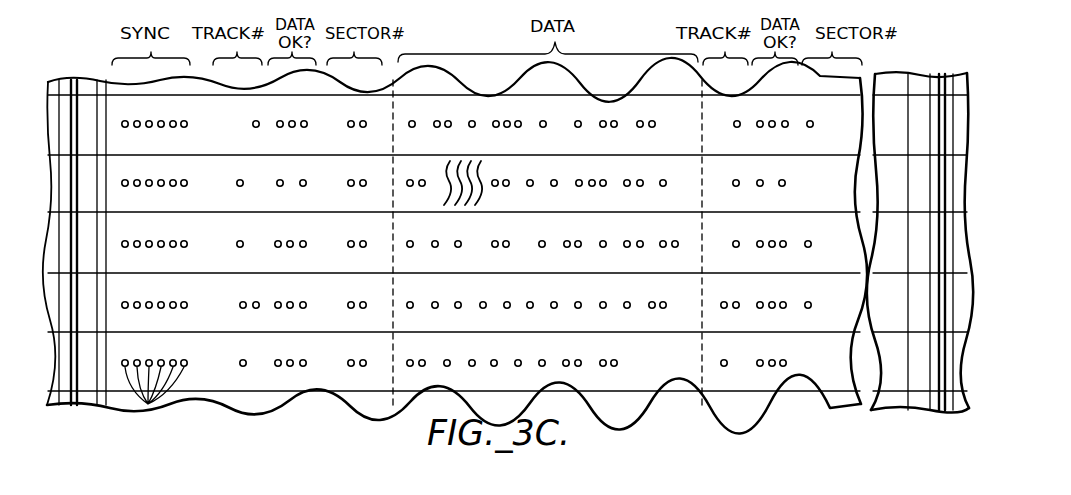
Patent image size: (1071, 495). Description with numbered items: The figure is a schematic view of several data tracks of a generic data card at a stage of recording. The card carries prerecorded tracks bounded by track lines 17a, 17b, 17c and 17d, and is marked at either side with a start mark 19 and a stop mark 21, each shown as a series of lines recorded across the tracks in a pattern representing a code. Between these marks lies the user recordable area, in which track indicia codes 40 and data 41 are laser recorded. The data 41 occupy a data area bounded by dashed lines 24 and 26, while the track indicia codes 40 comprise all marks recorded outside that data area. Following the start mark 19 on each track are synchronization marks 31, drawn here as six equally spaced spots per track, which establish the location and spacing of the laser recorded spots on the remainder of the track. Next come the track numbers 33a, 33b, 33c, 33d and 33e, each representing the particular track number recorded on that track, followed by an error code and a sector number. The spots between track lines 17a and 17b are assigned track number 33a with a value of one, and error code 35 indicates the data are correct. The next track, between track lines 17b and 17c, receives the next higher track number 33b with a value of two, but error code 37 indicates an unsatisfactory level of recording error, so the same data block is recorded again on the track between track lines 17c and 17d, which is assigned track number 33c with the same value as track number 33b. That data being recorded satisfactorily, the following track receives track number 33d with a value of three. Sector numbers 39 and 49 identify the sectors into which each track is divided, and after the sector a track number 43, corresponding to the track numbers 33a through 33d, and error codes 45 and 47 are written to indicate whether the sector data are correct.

The start mark 19 is at (87, 70).
The stop mark 21 is at (947, 66).
The data 41 is at (496, 108).
The track number 33a is at (254, 120).
The track number 33b is at (240, 179).
The track number 33c is at (240, 240).
The track number 33d is at (256, 301).
The track number 33e is at (243, 359).
The error code 35 is at (310, 138).
The error code 37 is at (300, 200).
The track line 17a is at (357, 98).
The track line 17b is at (357, 158).
The track line 17c is at (357, 218).
The track line 17d is at (357, 278).
The sector number 39 is at (363, 361).
The error code 45 is at (783, 121).
The track number 43 is at (737, 128).
The sector number 49 is at (812, 120).
The error code 47 is at (762, 179).
The dashed line 24 is at (395, 354).
The dashed line 26 is at (700, 358).
The synchronization marks 31 is at (148, 406).
The track indicia codes 40 is at (273, 382).